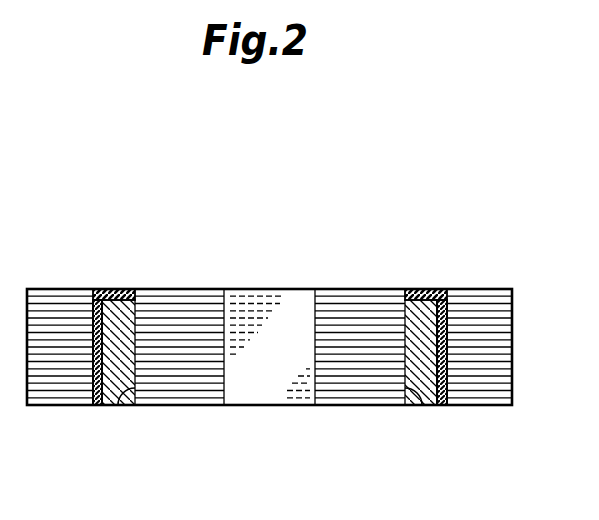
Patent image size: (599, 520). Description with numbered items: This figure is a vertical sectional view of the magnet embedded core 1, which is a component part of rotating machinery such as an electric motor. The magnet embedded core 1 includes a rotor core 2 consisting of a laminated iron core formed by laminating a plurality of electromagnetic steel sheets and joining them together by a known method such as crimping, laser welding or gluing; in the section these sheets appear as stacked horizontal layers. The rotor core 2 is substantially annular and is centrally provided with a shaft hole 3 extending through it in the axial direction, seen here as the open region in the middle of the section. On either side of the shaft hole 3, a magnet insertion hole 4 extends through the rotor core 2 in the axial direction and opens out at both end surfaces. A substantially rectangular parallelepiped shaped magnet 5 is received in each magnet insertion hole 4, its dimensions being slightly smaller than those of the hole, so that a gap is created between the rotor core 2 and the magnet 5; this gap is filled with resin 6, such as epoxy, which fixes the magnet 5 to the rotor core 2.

The magnet embedded core 1 is at (475, 243).
The rotor core 2 is at (362, 290).
The shaft hole 3 is at (290, 303).
The magnet insertion hole 4 is at (125, 405).
The magnet 5 is at (118, 296).
The resin 6 is at (98, 405).